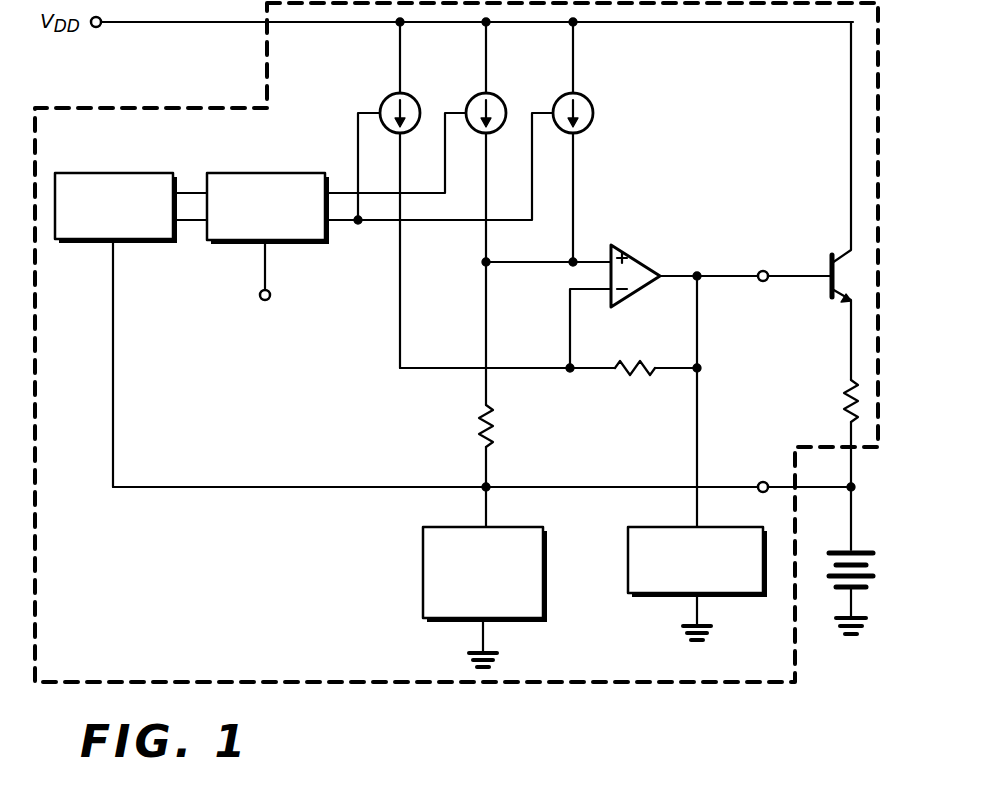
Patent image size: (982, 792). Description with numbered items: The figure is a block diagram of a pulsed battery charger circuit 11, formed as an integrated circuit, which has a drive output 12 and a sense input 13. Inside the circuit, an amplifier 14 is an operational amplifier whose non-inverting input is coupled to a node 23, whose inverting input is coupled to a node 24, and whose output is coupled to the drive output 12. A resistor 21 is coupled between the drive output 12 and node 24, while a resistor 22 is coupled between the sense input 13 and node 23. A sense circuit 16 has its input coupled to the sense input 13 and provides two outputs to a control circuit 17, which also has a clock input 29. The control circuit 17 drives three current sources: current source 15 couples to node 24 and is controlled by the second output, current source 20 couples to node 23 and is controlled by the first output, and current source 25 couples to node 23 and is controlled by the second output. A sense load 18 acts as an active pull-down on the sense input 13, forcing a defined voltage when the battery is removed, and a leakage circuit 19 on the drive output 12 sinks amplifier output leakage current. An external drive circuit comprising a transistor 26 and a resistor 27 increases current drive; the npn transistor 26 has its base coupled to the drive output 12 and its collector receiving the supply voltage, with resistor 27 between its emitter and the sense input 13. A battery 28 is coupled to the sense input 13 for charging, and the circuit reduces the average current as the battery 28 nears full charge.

The pulsed battery charger circuit 11 is at (158, 649).
The drive output 12 is at (760, 281).
The sense input 13 is at (760, 483).
The amplifier 14 is at (643, 260).
The current source 15 is at (408, 94).
The sense circuit 16 is at (96, 170).
The control circuit 17 is at (254, 170).
The sense load 18 is at (421, 579).
The leakage circuit 19 is at (626, 568).
The current source 20 is at (494, 94).
The resistor 21 is at (634, 386).
The resistor 22 is at (476, 432).
The node 23 is at (482, 263).
The node 24 is at (571, 373).
The current source 25 is at (581, 94).
The transistor 26 is at (830, 260).
The resistor 27 is at (836, 403).
The battery 28 is at (857, 547).
The clock input 29 is at (271, 293).